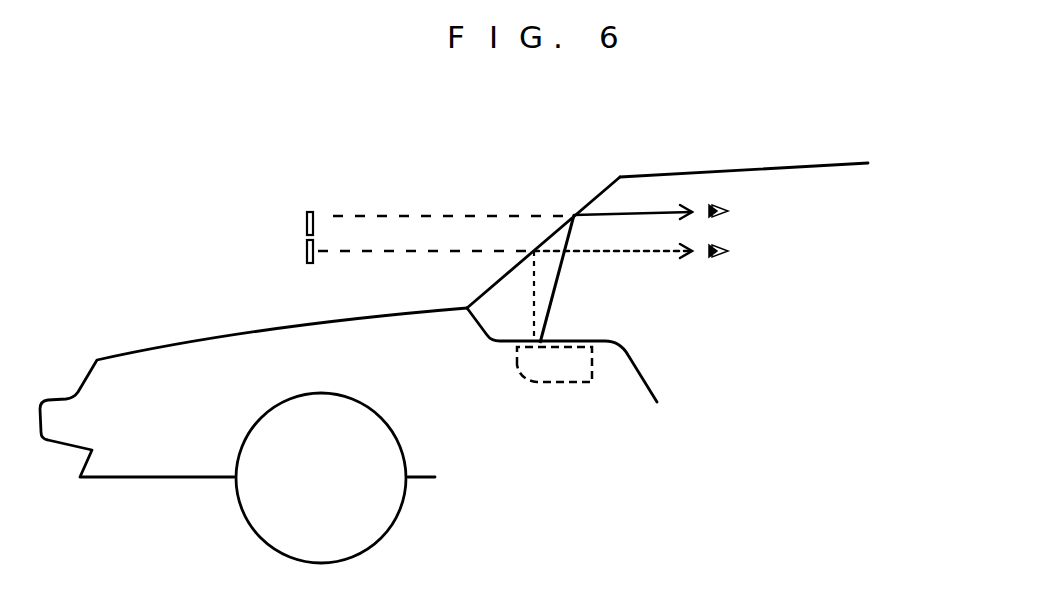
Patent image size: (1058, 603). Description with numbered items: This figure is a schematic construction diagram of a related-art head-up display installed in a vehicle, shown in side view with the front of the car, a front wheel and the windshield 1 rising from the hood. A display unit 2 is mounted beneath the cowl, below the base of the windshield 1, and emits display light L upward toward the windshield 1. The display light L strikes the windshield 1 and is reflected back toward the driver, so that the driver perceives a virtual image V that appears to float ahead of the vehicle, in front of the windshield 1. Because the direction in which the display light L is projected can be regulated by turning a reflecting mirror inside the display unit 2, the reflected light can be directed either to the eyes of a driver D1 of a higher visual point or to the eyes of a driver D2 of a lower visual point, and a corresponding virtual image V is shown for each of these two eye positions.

The windshield 1 is at (603, 190).
The display unit 2 is at (574, 382).
The display light L is at (558, 287).
The virtual image V is at (307, 215).
The driver of a higher visual point D1 is at (726, 203).
The driver of a lower visual point D2 is at (727, 250).